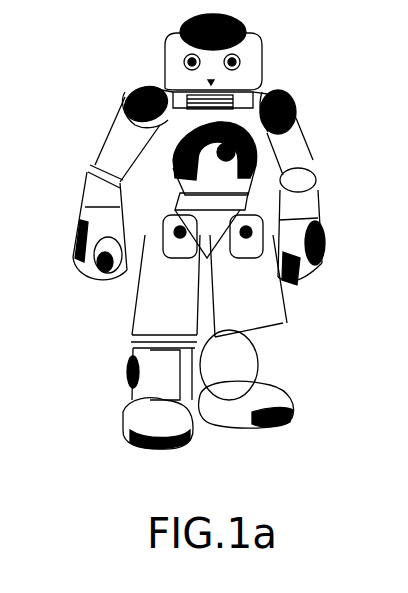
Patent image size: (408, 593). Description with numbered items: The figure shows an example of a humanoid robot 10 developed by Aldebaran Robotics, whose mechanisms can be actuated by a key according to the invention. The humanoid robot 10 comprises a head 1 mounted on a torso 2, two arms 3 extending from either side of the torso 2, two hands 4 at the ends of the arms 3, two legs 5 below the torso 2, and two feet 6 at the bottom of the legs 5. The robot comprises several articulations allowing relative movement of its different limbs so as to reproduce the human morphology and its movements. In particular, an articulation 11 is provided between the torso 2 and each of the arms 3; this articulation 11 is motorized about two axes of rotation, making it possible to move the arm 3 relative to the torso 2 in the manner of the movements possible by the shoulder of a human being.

The humanoid robot 10 is at (55, 39).
The head 1 is at (263, 42).
The articulation 11 is at (140, 87).
The torso 2 is at (258, 125).
The arms 3 is at (310, 157).
The hands 4 is at (320, 240).
The legs 5 is at (258, 343).
The feet 6 is at (293, 407).